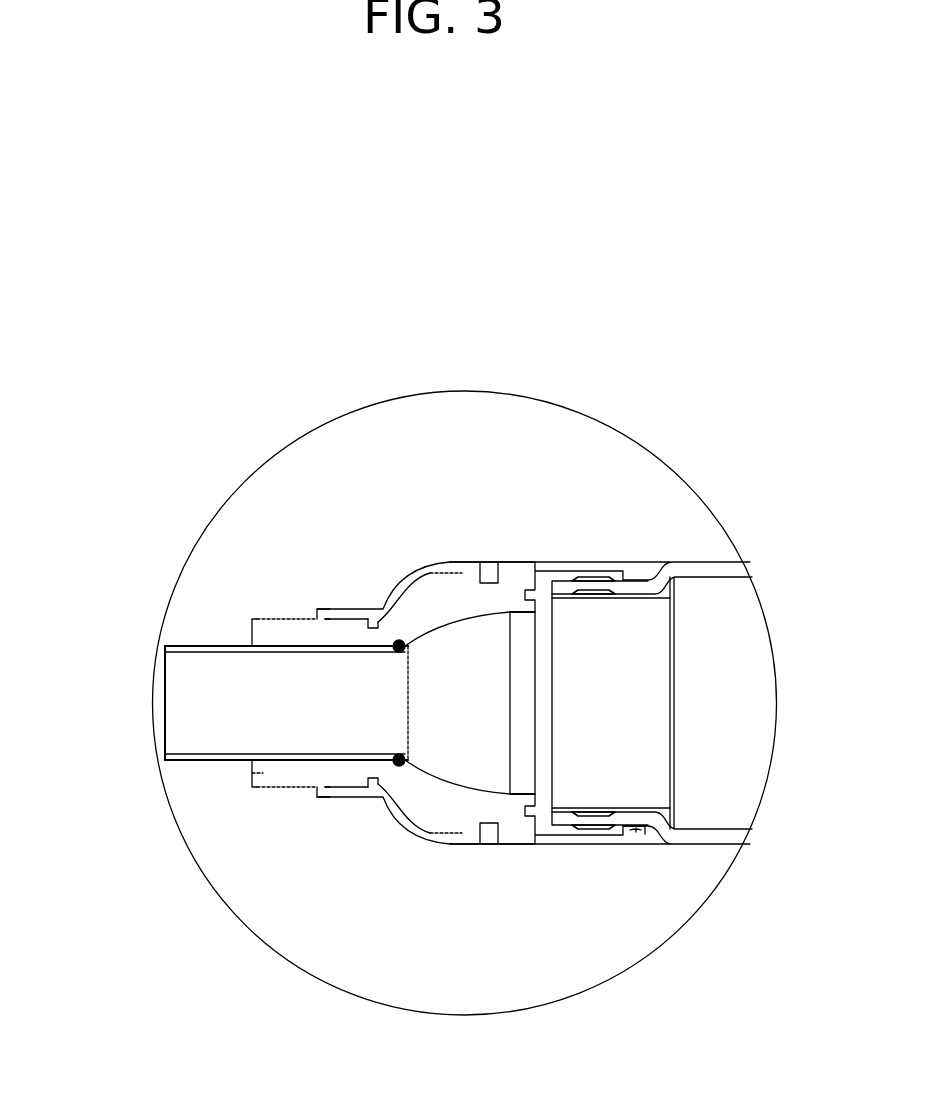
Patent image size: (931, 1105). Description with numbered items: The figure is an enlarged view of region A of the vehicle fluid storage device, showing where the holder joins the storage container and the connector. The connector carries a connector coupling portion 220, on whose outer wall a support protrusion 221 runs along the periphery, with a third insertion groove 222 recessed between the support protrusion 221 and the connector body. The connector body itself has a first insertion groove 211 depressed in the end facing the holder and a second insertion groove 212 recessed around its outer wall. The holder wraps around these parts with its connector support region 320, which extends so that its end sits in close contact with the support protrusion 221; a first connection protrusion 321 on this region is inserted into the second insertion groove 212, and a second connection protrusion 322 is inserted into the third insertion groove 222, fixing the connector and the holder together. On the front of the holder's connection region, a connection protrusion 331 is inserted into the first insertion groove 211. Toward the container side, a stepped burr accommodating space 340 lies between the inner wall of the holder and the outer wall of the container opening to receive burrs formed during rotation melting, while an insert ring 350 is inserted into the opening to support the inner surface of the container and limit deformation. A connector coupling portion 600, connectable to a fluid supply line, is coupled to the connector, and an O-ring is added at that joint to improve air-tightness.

The enlarged region A is at (305, 435).
The connector coupling portion 600 is at (213, 645).
The connector coupling portion 220 is at (262, 773).
The support protrusion 221 is at (317, 797).
The third insertion groove 222 is at (373, 797).
The connector support region 320 is at (345, 607).
The first connection protrusion 321 is at (487, 575).
The second connection protrusion 322 is at (414, 617).
The first insertion groove 211 is at (543, 583).
The second insertion groove 212 is at (490, 822).
The connection protrusion 331 is at (512, 815).
The burr accommodating space 340 is at (637, 840).
The insert ring 350 is at (640, 768).
The element O-ring is at (400, 767).